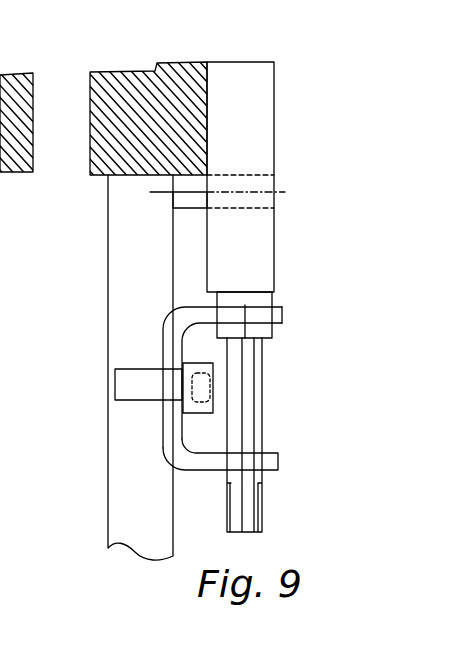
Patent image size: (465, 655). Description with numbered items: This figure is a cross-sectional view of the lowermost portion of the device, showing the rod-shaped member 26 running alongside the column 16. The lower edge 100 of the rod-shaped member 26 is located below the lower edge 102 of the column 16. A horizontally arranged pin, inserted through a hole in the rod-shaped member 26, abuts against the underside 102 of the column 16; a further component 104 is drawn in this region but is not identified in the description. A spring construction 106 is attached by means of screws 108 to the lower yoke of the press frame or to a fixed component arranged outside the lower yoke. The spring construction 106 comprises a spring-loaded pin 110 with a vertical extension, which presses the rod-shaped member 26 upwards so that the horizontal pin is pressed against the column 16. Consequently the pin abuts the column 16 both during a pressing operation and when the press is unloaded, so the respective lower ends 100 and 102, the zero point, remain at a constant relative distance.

The column 16 is at (158, 70).
The rod-shaped member 26 is at (253, 88).
The lower edge of the rod-shaped member 100 is at (274, 291).
The lower edge of the column 102 is at (100, 176).
The pin 104 is at (257, 203).
The spring construction 106 is at (279, 456).
The screws 108 is at (125, 392).
The spring-loaded pin 110 is at (250, 393).